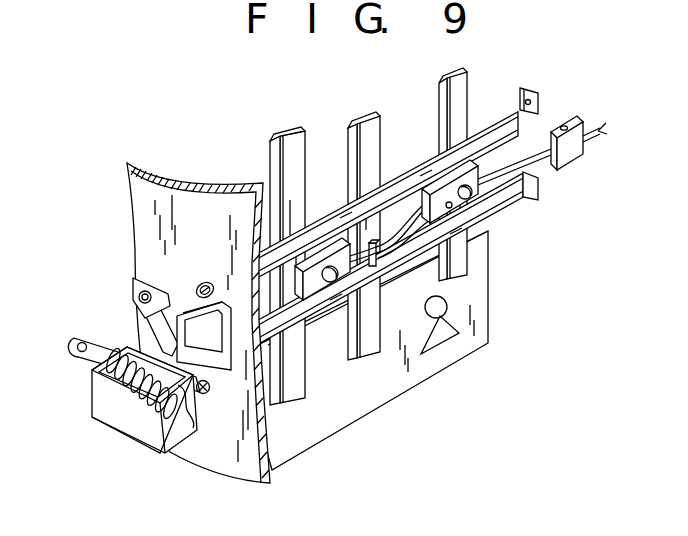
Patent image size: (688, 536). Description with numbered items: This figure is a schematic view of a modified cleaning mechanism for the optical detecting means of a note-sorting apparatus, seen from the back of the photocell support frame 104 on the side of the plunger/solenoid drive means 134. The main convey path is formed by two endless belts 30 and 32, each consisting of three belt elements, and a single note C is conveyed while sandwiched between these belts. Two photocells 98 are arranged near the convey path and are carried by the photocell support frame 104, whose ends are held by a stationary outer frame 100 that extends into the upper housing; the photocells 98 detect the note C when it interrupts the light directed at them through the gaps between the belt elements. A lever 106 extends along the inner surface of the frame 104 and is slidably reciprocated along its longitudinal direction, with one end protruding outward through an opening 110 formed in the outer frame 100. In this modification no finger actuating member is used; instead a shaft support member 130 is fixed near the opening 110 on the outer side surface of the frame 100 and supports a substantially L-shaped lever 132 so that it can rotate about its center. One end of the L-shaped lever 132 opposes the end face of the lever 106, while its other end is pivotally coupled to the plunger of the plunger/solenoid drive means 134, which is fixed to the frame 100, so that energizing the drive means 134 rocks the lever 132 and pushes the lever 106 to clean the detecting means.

The endless belt 30 is at (273, 142).
The endless belt 32 is at (293, 152).
The photocell 98 is at (298, 268).
The stationary outer frame 100 is at (138, 229).
The photocell support frame 104 is at (518, 112).
The lever 106 is at (127, 398).
The opening 110 is at (178, 303).
The shaft support member 130 is at (138, 279).
The L-shaped lever 132 is at (108, 327).
The plunger/solenoid drive means 134 is at (142, 430).
The note C is at (488, 310).